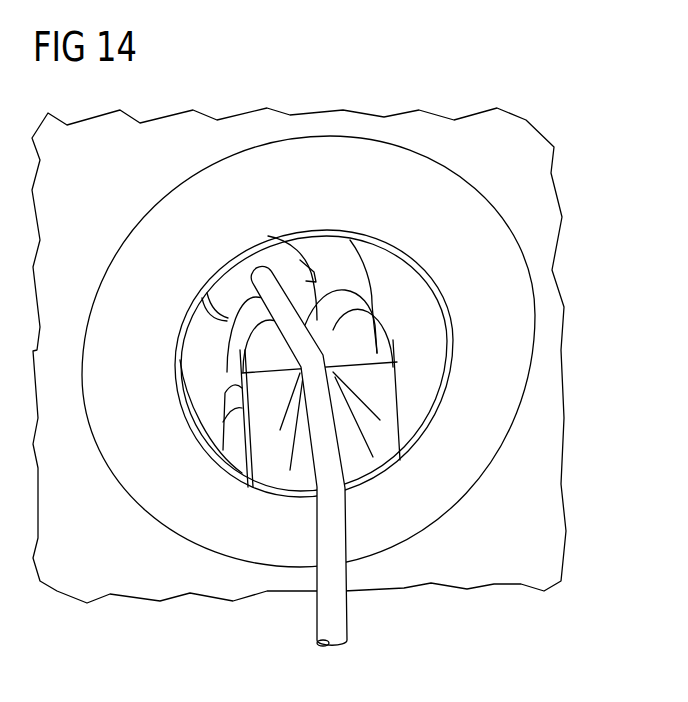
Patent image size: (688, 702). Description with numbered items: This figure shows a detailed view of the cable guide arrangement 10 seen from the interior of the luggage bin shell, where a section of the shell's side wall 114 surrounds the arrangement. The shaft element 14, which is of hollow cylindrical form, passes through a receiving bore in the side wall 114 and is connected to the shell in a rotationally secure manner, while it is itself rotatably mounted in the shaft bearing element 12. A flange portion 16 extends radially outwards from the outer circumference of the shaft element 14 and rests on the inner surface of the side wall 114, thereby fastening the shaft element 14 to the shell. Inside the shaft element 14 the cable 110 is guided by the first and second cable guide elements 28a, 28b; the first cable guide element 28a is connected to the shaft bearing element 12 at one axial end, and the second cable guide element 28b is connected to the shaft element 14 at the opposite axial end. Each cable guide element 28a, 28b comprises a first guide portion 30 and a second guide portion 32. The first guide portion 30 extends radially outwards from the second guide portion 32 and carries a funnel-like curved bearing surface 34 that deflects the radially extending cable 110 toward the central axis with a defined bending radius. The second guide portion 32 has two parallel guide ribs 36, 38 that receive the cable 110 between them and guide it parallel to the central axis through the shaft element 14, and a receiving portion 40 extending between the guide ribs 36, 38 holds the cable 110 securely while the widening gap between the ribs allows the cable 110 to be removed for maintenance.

The cable guide arrangement 10 is at (582, 99).
The shaft bearing element 12 is at (343, 283).
The shaft element 14 is at (358, 264).
The flange portion 16 is at (459, 484).
The first cable guide element 28a is at (267, 257).
The second cable guide element 28b is at (240, 431).
The first guide portion 30 is at (366, 466).
The second guide portion 32 is at (370, 305).
The bearing surface 34 is at (277, 464).
The guide rib 36 is at (263, 353).
The guide rib 38 is at (380, 343).
The receiving portion 40 is at (337, 373).
The cable 110 is at (344, 621).
The side wall 114 is at (551, 431).